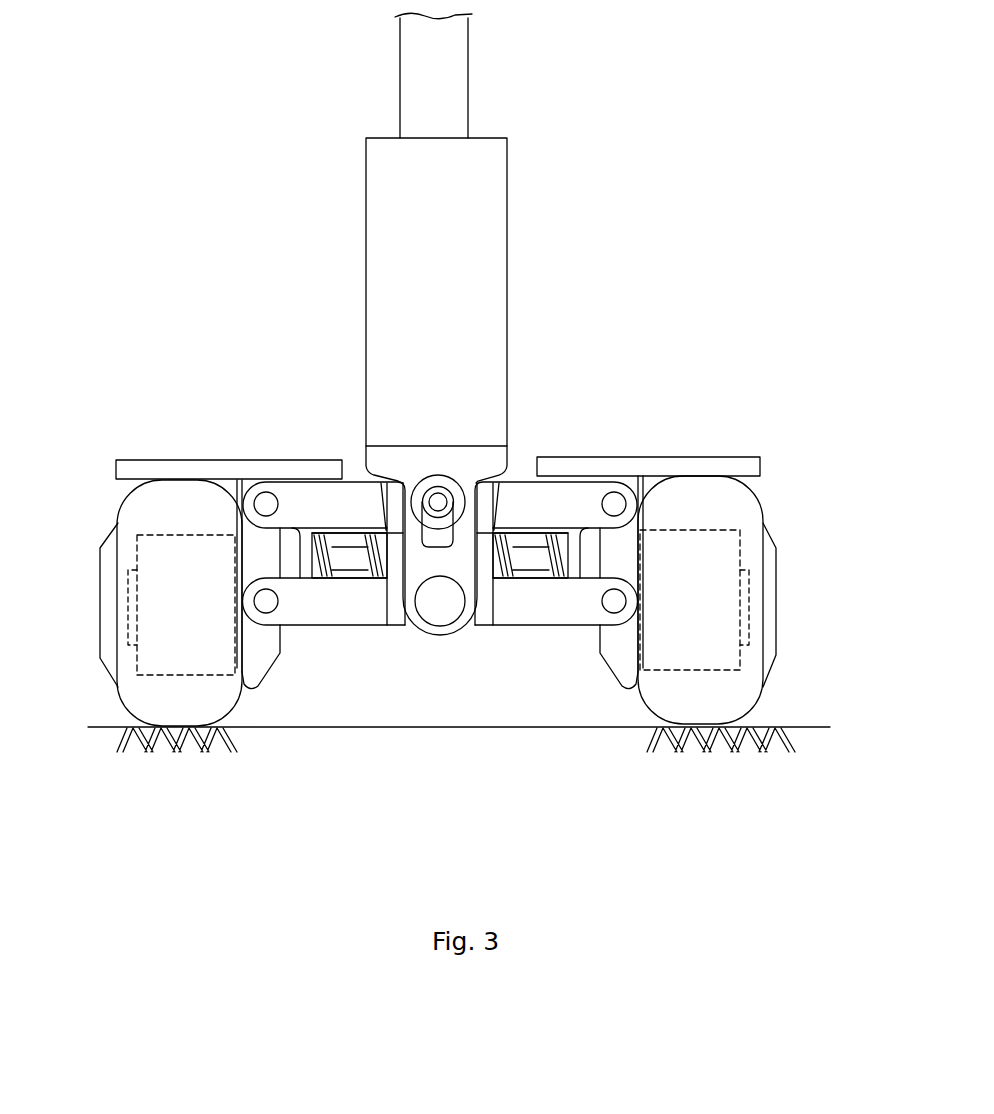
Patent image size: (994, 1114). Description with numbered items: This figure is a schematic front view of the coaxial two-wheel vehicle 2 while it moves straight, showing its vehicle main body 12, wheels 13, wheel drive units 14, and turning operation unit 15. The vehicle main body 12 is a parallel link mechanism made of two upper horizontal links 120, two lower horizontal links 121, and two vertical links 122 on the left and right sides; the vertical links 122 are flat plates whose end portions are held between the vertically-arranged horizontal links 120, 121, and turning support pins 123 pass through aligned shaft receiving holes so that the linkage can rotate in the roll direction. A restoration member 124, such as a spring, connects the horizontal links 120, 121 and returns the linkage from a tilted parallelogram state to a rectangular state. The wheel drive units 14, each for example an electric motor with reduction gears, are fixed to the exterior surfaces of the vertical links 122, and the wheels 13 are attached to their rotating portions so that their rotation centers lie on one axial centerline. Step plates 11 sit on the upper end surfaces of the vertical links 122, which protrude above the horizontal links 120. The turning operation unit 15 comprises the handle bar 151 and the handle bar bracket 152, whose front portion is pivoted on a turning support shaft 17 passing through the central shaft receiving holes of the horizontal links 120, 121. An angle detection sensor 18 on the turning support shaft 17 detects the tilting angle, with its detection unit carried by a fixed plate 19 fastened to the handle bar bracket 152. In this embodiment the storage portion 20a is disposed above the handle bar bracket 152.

The turning operation unit 15 is at (488, 75).
The handle bar 151 is at (468, 100).
The storage portion 20a is at (487, 178).
The coaxial two-wheel vehicle 2 is at (567, 258).
The turning support shaft 17 is at (455, 482).
The angle detection sensor 18 is at (415, 478).
The fixed plate 19 is at (430, 538).
The vehicle main body 12 is at (470, 601).
The horizontal link 120 is at (517, 497).
The horizontal link 121 is at (545, 613).
The vertical link 122 is at (625, 565).
The turning support pin 123 is at (612, 500).
The restoration member 124 is at (358, 575).
The handle bar bracket 152 is at (463, 572).
The step plate 11 is at (150, 470).
The wheel 13 is at (135, 505).
The wheel drive unit 14 is at (128, 580).